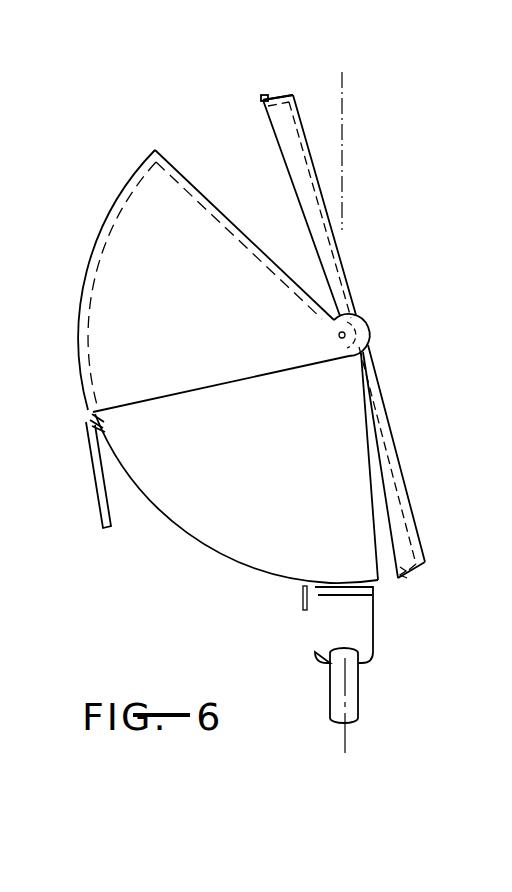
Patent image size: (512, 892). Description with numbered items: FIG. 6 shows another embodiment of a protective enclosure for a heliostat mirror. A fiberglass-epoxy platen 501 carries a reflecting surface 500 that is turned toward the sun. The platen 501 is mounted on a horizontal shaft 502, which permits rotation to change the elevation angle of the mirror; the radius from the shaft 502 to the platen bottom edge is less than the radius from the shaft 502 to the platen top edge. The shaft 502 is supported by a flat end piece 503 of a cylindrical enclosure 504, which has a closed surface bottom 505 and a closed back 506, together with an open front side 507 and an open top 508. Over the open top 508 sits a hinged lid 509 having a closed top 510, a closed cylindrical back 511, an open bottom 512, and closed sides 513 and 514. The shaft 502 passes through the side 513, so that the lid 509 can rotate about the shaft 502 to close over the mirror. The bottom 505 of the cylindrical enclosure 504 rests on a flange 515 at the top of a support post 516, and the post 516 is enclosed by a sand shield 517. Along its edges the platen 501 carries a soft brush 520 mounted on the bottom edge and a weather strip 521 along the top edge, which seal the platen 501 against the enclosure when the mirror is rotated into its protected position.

The reflecting surface 500 is at (302, 123).
The fiberglass-epoxy platen 501 is at (261, 100).
The horizontal shaft 502 is at (338, 335).
The flat end piece 503 is at (281, 485).
The cylindrical enclosure 504 is at (376, 588).
The closed surface bottom 505 is at (340, 582).
The closed back 506 is at (215, 553).
The open front side 507 is at (382, 572).
The open top 508 is at (234, 222).
The hinged lid 509 is at (153, 150).
The closed top 510 is at (181, 173).
The closed cylindrical back 511 is at (107, 214).
The open bottom 512 is at (204, 388).
The closed side 513 is at (187, 265).
The closed side 514 is at (136, 274).
The flange 515 is at (378, 594).
The support post 516 is at (359, 700).
The sand shield 517 is at (355, 626).
The soft brush 520 is at (404, 577).
The weather strip 521 is at (265, 95).